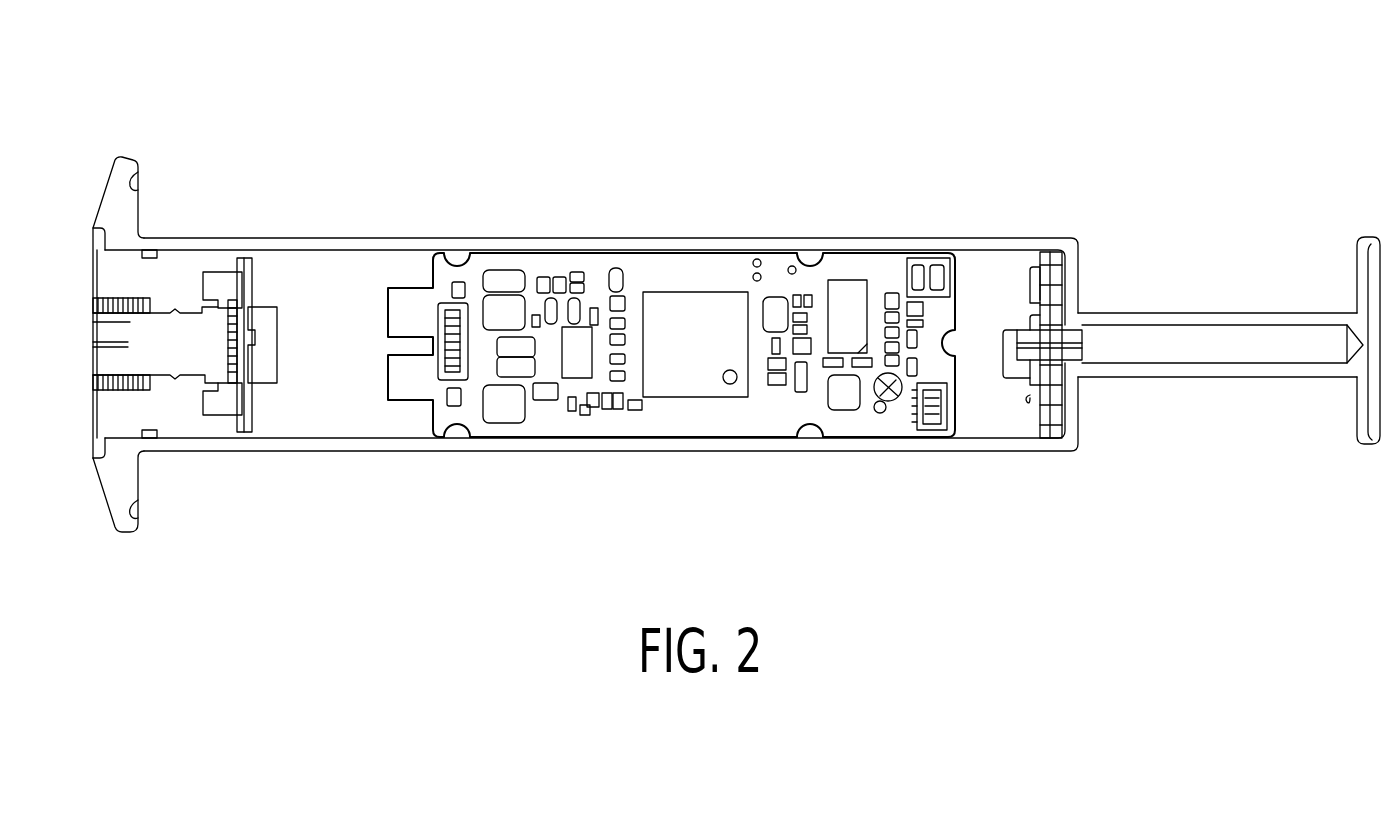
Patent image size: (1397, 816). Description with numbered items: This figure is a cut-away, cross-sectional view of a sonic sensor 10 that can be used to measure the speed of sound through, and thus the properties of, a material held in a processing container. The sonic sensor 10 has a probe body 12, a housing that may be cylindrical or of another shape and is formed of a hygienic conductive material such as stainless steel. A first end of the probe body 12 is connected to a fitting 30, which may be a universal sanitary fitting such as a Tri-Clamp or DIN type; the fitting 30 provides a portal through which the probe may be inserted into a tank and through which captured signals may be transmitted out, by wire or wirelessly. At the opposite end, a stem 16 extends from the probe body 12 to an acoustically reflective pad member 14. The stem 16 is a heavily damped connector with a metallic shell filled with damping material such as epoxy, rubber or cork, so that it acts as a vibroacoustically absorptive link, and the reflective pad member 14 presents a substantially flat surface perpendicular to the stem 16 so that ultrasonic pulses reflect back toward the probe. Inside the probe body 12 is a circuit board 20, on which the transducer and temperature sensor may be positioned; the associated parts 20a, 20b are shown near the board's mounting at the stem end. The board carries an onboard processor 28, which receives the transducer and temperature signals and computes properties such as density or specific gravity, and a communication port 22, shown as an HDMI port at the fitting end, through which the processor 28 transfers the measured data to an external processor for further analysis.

The sonic sensor 10 is at (262, 111).
The probe body 12 is at (575, 237).
The reflective pad member 14 is at (1370, 240).
The stem 16 is at (1200, 313).
The circuit board 20 is at (1087, 380).
The fastener nut 20a is at (1033, 297).
The mounting plate 20b is at (1052, 250).
The communication port 22 is at (93, 333).
The processor 28 is at (690, 388).
The fitting 30 is at (133, 160).